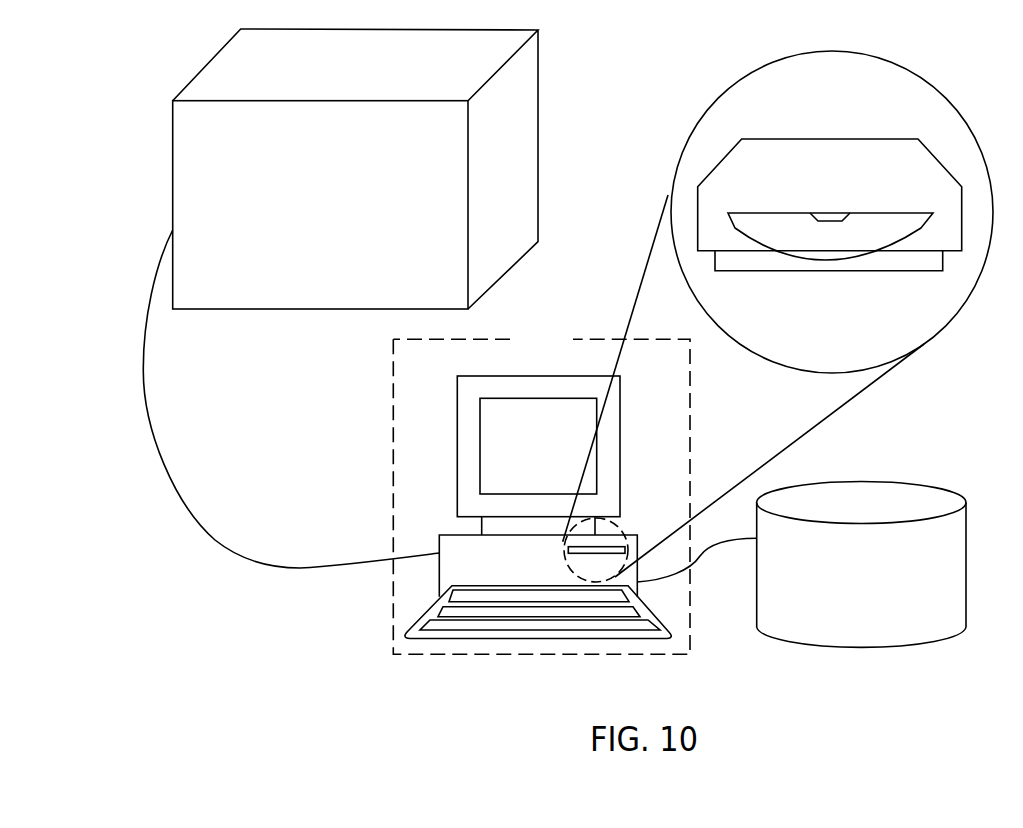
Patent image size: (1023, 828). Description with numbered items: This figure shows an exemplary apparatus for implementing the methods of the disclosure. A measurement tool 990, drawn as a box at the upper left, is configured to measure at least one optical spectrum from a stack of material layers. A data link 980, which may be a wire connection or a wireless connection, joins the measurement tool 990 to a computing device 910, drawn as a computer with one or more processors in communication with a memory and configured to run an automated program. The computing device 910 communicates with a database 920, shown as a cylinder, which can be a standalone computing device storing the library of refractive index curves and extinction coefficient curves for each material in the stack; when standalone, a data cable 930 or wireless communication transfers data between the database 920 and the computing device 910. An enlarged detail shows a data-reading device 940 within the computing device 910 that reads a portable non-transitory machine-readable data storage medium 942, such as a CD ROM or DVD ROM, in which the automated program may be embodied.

The computing device 910 is at (561, 351).
The database 920 is at (888, 586).
The data cable 930 is at (728, 547).
The data-reading device 940 is at (853, 172).
The portable non-transitory machine-readable data storage medium 942 is at (853, 248).
The data link 980 is at (248, 565).
The measurement tool 990 is at (353, 226).